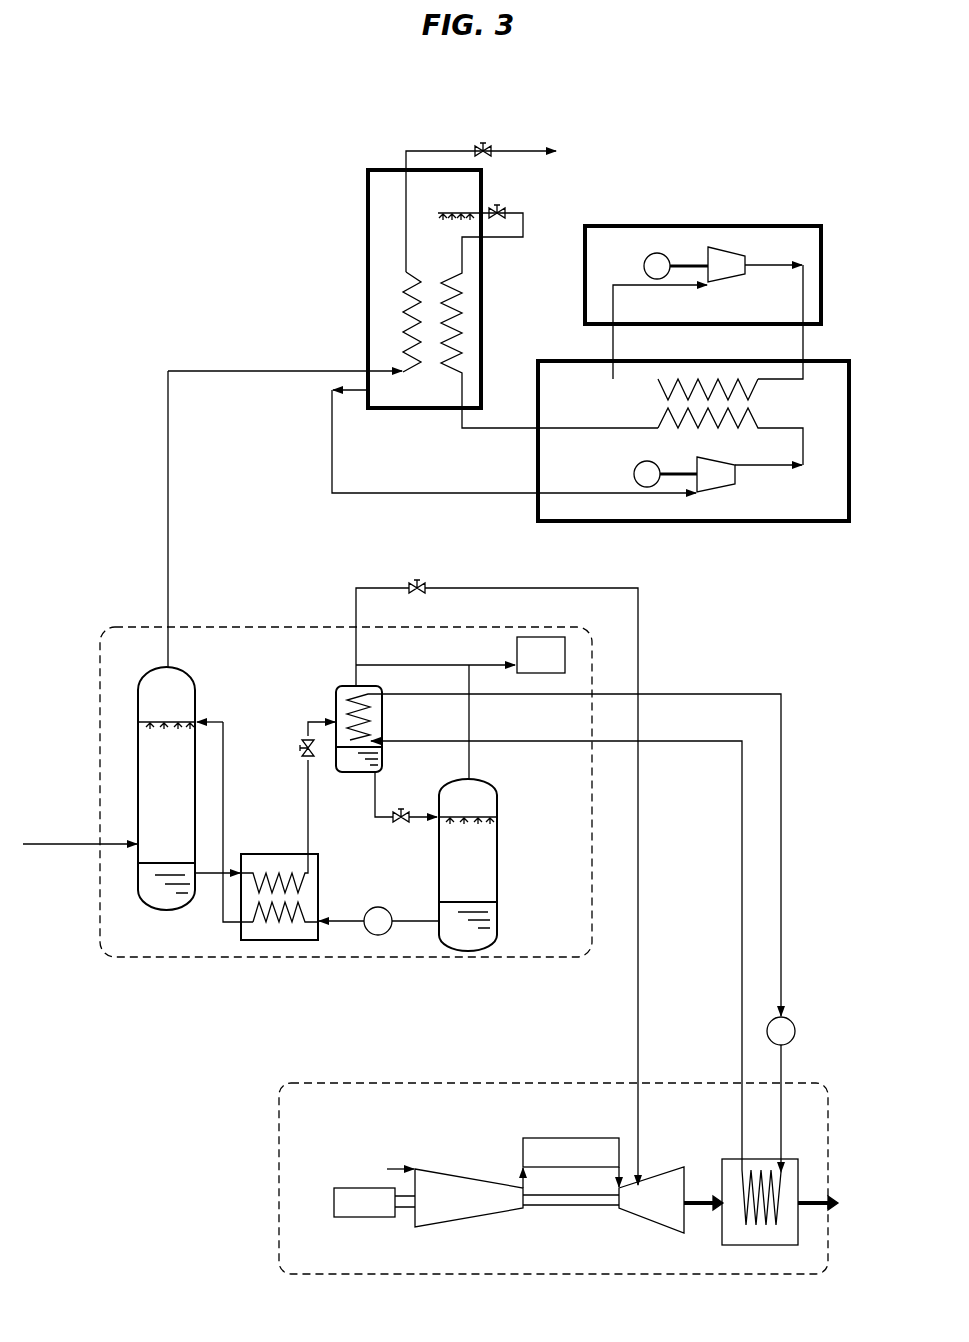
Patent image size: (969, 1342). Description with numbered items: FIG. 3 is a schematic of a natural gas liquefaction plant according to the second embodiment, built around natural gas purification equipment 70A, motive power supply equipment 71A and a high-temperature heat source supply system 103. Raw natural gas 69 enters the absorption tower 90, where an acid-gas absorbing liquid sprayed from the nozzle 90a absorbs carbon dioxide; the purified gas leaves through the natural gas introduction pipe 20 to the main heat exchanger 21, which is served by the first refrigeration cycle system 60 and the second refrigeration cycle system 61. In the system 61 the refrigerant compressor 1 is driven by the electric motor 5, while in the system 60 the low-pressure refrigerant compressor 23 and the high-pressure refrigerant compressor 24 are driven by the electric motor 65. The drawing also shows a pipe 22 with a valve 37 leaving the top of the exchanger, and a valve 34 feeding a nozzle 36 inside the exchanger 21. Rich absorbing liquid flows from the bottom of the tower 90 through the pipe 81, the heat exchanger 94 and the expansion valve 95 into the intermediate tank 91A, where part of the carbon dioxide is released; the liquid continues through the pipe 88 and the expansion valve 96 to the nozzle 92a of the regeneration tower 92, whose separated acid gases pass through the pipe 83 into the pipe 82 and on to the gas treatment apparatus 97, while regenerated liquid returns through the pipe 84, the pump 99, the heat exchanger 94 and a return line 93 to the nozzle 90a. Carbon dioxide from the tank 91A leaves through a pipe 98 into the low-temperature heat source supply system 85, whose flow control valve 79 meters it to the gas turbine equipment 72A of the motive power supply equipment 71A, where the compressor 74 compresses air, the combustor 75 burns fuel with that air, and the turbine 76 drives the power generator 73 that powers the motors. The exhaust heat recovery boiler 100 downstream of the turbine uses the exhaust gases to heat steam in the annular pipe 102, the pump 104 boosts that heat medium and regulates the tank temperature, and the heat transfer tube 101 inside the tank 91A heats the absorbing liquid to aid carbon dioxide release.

The refrigerant compressor 1 is at (709, 245).
The electric motor 5 is at (652, 253).
The natural gas introduction pipe 20 is at (292, 372).
The main heat exchanger 21 is at (368, 214).
The discharge line 22 is at (508, 150).
The low-pressure refrigerant compressor 23 is at (749, 487).
The high-pressure refrigerant compressor 24 is at (725, 488).
The valve 34 is at (497, 205).
The spray nozzle 36 is at (450, 211).
The valve 37 is at (483, 145).
The first refrigeration cycle system 60 is at (812, 395).
The second refrigeration cycle system 61 is at (794, 220).
The electric motor 65 is at (638, 465).
The raw natural gas 69 is at (68, 843).
The natural gas purification equipment 70A is at (113, 661).
The motive power supply equipment 71A is at (340, 1117).
The turbine section 72A is at (580, 1121).
The power generator 73 is at (374, 1202).
The compressor 74 is at (503, 1198).
The combustor 75 is at (571, 1163).
The turbine 76 is at (671, 1200).
The flow control valve 79 is at (417, 580).
The pipe 81 is at (206, 875).
The pipe 82 is at (390, 665).
The pipe 83 is at (471, 672).
The pipe 84 is at (412, 922).
The low-temperature heat source supply system 85 is at (645, 1128).
The pipe 88 is at (418, 820).
The absorption tower 90 is at (138, 765).
The nozzle 90a is at (182, 722).
The intermediate tank 91A is at (355, 772).
The regeneration tower 92 is at (497, 848).
The nozzle 92a is at (492, 817).
The lean solution return line 93 is at (223, 768).
The heat exchanger 94 is at (262, 854).
The expansion valve 95 is at (303, 746).
The expansion valve 96 is at (398, 826).
The gas treatment apparatus 97 is at (530, 667).
The CO2 gas line 98 is at (356, 610).
The pump 99 is at (388, 908).
The exhaust heat recovery boiler 100 is at (765, 1247).
The heat transfer tube 101 is at (382, 714).
The pipe 102 is at (740, 955).
The high-temperature heat source supply system 103 is at (801, 851).
The pump 104 is at (793, 1044).